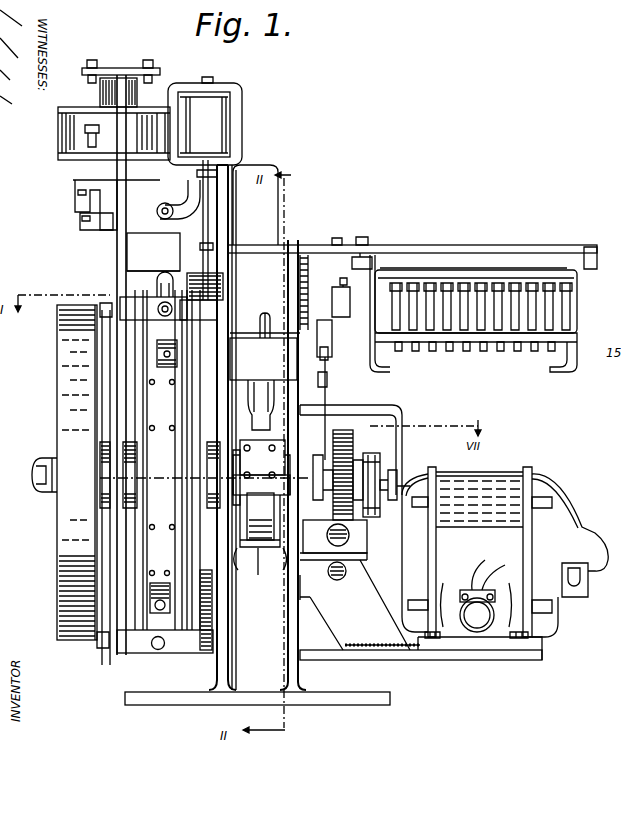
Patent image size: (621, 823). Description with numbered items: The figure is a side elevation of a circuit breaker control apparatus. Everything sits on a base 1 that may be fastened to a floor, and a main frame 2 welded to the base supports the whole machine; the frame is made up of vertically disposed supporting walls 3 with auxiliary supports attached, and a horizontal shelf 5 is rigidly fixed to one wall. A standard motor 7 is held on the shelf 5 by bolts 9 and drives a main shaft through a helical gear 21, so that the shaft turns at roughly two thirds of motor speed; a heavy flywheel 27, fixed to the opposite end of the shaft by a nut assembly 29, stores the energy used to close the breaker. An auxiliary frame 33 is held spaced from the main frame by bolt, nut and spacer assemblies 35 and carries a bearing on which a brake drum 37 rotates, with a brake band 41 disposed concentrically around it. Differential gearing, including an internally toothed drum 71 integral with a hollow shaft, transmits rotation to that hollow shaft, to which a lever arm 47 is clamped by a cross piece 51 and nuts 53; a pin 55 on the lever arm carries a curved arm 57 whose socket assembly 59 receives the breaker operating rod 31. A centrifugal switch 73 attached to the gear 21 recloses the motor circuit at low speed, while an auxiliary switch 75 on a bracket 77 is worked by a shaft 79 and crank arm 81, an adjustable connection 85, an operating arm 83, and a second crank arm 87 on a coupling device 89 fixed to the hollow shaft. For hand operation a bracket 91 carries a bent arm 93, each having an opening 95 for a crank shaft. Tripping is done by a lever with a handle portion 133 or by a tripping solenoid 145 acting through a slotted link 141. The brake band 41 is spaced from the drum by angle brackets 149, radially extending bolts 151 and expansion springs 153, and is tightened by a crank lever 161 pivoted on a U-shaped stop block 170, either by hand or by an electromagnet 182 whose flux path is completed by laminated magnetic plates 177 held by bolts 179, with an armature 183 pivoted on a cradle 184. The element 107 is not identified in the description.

The base 1 is at (370, 706).
The main frame 2 is at (298, 671).
The vertically disposed supporting walls 3 is at (223, 663).
The shelf 5 is at (443, 661).
The motor 7 is at (492, 473).
The bolts 9 is at (425, 652).
The helical gear 21 is at (352, 456).
The flywheel 27 is at (58, 544).
The nut assembly 29 is at (40, 483).
The breaker operating rod 31 is at (268, 316).
The auxiliary frame 33 is at (103, 660).
The bolt, nut and spacer assemblies 35 is at (133, 296).
The brake drum 37 is at (140, 383).
The brake band 41 is at (155, 412).
The lever arm 47 is at (255, 550).
The cross piece 51 is at (245, 462).
The nuts 53 is at (248, 438).
The pin 55 is at (276, 550).
The curved arm 57 is at (257, 576).
The socket assembly 59 is at (250, 418).
The drum 71 is at (193, 380).
The centrifugal switch 73 is at (378, 462).
The auxiliary switch 75 is at (478, 282).
The bracket 77 is at (258, 244).
The shaft 79 is at (342, 300).
The crank arm 81 is at (332, 330).
The operating arm 83 is at (328, 380).
The adjustable connection 85 is at (330, 357).
The second crank arm 87 is at (327, 536).
The coupling device 89 is at (352, 535).
The bracket 91 is at (335, 603).
The bent arm 93 is at (300, 585).
The opening 95 is at (336, 579).
The lower bracket 107 is at (200, 622).
The handle portion 133 is at (201, 296).
The slotted link 141 is at (222, 237).
The tripping solenoid 145 is at (230, 113).
The angle brackets 149 is at (153, 308).
The radially extending bolts 151 is at (162, 585).
The expansion spring 153 is at (155, 350).
The crank lever 161 is at (160, 236).
The U-shaped stop block 170 is at (135, 272).
The laminated plates of magnetic material 177 is at (100, 100).
The bolts 179 is at (150, 90).
The electromagnet 182 is at (70, 137).
The armature 183 is at (110, 218).
The cradle 184 is at (93, 203).